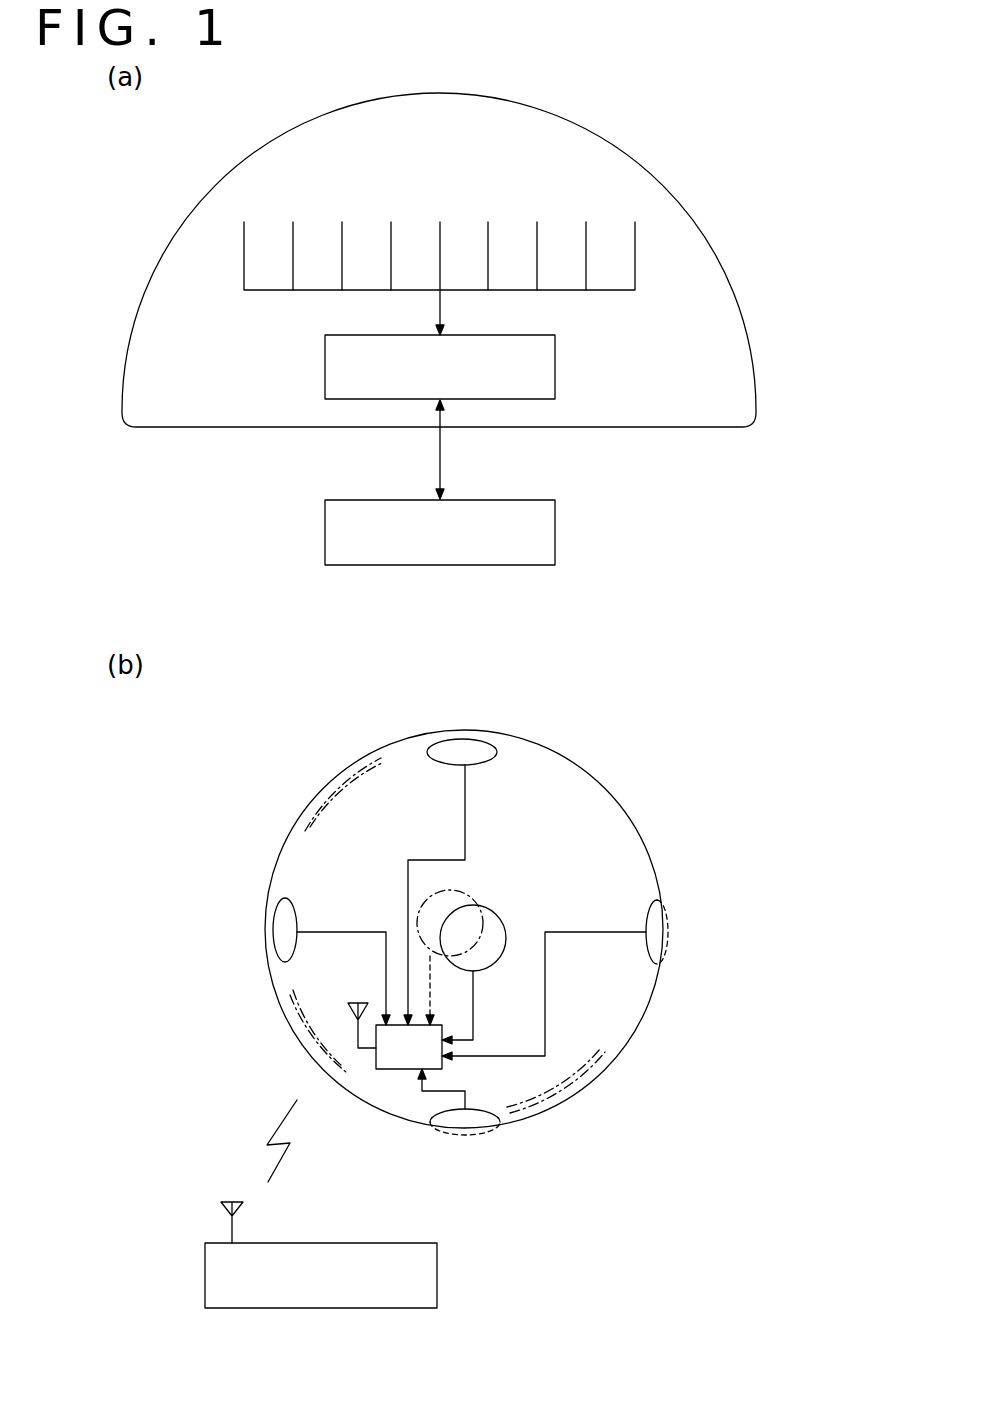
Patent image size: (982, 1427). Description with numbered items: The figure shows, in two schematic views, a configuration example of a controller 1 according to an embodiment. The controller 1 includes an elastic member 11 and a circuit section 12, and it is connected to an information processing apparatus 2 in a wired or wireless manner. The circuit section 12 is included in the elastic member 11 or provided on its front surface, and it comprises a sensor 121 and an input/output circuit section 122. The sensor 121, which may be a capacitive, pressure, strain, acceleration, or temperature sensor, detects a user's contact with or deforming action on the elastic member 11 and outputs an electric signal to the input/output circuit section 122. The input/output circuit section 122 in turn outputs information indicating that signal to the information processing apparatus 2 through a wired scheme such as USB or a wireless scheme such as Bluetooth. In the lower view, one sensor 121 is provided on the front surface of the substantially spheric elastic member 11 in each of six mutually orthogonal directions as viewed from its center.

The controller 1 is at (475, 289).
The elastic member 11 is at (627, 152).
The circuit section 12 is at (232, 392).
The sensor 121 is at (282, 224).
The input/output circuit section 122 is at (556, 367).
The information processing apparatus 2 is at (556, 531).